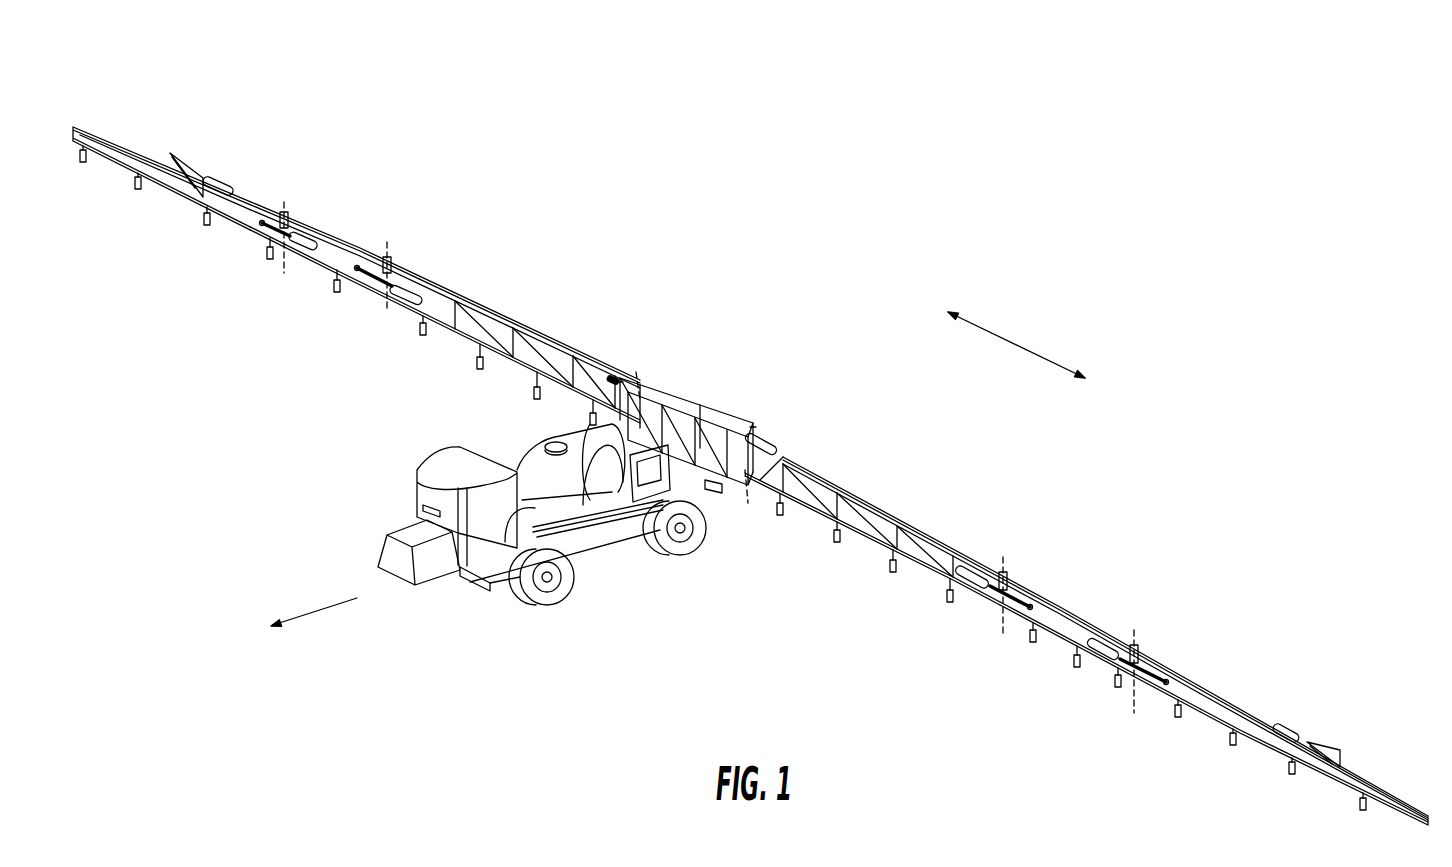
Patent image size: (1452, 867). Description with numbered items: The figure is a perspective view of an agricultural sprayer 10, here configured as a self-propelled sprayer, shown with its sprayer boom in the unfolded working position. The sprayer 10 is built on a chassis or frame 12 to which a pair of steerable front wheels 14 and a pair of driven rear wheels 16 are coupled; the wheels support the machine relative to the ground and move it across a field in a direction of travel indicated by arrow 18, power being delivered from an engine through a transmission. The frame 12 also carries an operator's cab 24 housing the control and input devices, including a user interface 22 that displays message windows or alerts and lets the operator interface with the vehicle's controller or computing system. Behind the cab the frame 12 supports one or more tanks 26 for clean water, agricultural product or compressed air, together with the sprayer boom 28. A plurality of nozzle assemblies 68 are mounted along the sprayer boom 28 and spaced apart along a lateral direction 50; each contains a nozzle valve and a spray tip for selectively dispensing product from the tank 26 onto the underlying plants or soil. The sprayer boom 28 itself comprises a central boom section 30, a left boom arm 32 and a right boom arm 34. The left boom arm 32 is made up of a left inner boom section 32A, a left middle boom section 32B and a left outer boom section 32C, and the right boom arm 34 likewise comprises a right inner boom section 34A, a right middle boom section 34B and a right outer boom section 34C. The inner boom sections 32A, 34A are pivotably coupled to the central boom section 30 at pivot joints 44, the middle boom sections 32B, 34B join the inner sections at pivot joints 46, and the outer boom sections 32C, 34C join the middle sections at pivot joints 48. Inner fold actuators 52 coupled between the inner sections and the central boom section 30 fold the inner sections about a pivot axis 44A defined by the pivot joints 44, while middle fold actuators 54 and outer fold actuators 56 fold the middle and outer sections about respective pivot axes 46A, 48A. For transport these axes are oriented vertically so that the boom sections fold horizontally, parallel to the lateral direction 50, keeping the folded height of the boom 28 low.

The agricultural sprayer 10 is at (176, 125).
The frame 12 is at (587, 545).
The front wheels 14 is at (548, 605).
The rear wheels 16 is at (690, 557).
The direction of travel 18 is at (318, 610).
The user interface 22 is at (428, 508).
The operator's cab 24 is at (440, 470).
The tank 26 is at (527, 455).
The sprayer boom 28 is at (810, 428).
The central boom section 30 is at (705, 398).
The left boom arm 32 is at (1108, 490).
The left inner boom section 32A is at (880, 498).
The left middle boom section 32B is at (1098, 625).
The left outer boom section 32C is at (1215, 692).
The right boom arm 34 is at (550, 222).
The right inner boom section 34A is at (480, 305).
The right middle boom section 34B is at (323, 225).
The right outer boom section 34C is at (273, 207).
The pivot joints 44 is at (657, 383).
The pivot axis 44A is at (640, 372).
The pivot joints 46 is at (1003, 577).
The pivot axis 46A is at (387, 313).
The pivot joints 48 is at (285, 220).
The pivot axis 48A is at (278, 262).
The lateral direction 50 is at (1020, 343).
The inner fold actuators 52 is at (617, 380).
The middle fold actuators 54 is at (413, 290).
The outer fold actuators 56 is at (305, 250).
The nozzle assemblies 68 is at (423, 330).